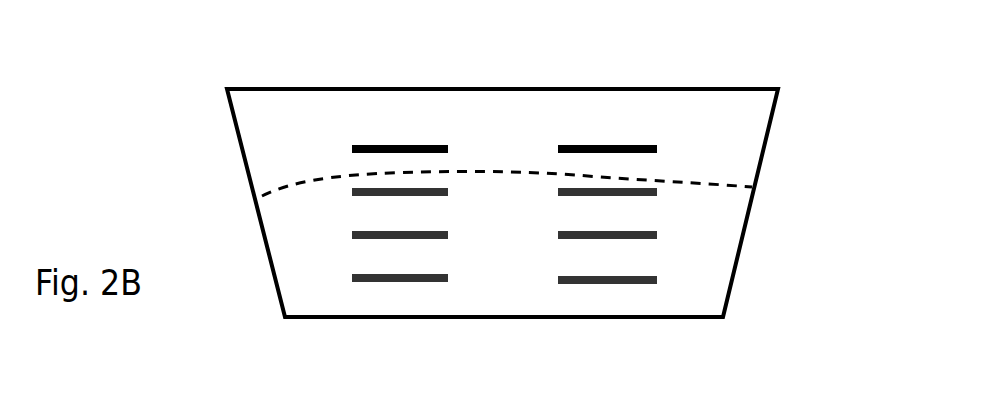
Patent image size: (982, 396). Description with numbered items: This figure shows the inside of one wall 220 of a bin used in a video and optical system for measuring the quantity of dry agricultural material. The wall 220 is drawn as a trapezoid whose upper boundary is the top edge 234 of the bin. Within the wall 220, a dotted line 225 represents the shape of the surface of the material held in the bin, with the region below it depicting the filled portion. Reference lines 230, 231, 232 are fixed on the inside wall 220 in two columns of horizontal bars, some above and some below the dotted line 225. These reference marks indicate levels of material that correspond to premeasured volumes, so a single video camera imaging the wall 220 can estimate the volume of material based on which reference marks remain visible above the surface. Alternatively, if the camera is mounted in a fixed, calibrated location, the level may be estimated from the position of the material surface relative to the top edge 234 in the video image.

The wall 220 is at (720, 280).
The dotted line 225 is at (722, 178).
The reference line 230 is at (362, 287).
The reference line 231 is at (443, 245).
The reference line 232 is at (598, 288).
The top edge 234 is at (463, 89).